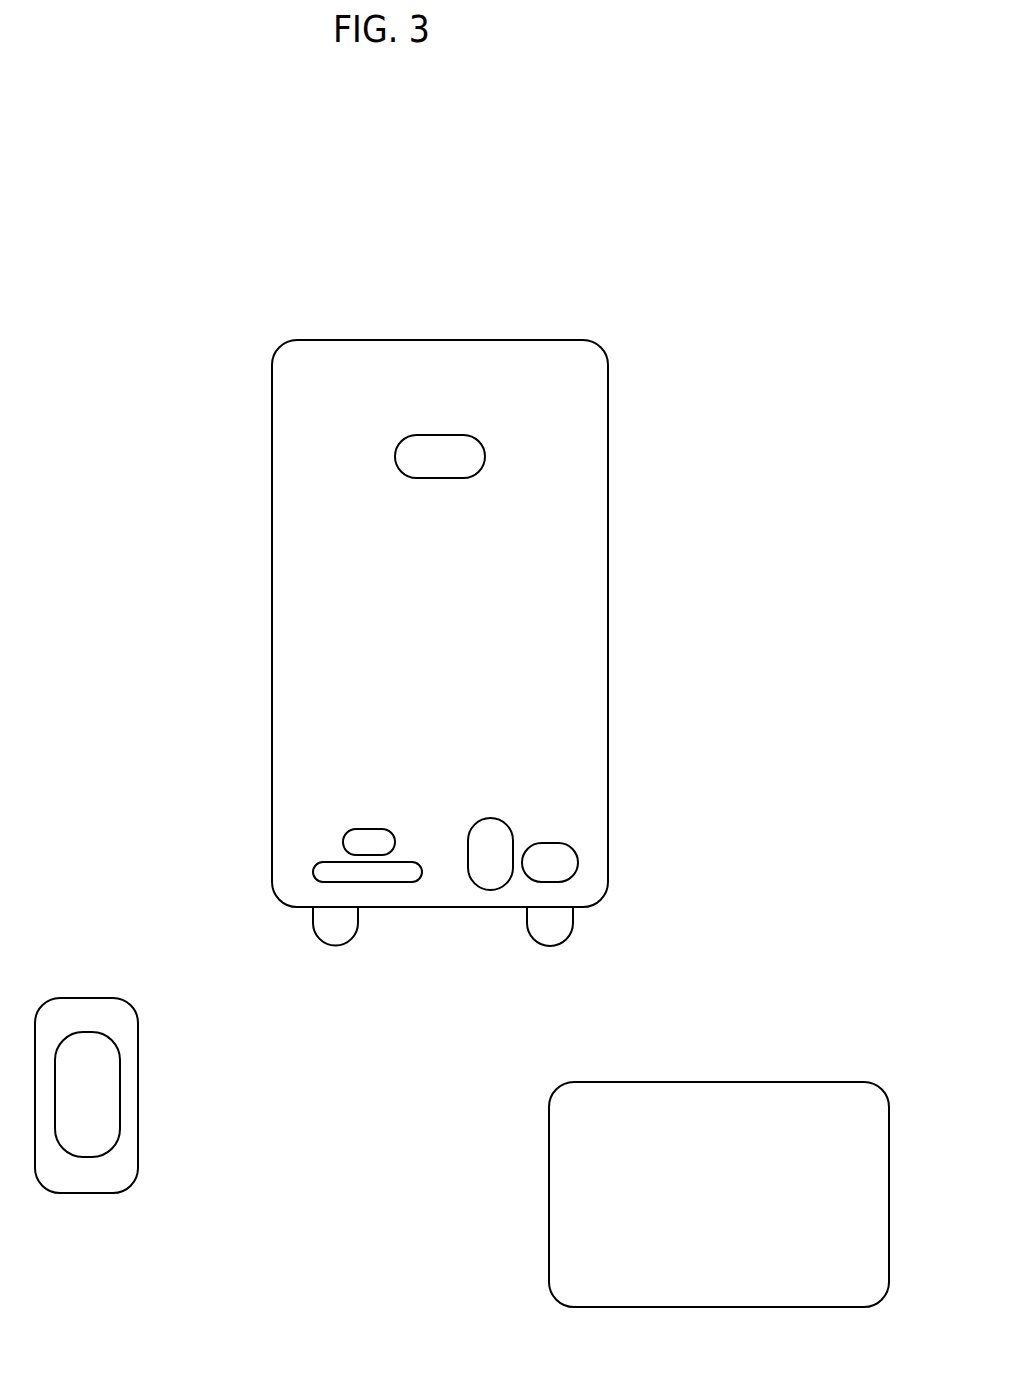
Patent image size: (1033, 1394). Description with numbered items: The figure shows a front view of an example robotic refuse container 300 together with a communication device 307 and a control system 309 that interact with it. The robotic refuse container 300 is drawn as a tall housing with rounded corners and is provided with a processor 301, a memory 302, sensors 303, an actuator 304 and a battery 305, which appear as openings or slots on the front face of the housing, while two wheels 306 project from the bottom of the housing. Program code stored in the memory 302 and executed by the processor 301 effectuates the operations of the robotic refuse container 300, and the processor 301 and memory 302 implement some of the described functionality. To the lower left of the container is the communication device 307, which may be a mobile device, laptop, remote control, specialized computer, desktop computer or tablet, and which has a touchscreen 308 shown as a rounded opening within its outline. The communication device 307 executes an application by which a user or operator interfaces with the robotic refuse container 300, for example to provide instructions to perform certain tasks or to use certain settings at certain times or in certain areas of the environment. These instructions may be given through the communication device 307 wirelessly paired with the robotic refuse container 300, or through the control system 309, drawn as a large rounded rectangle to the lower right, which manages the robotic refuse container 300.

The robotic refuse container 300 is at (609, 620).
The processor 301 is at (353, 829).
The memory 302 is at (578, 862).
The sensors 303 is at (485, 456).
The actuator 304 is at (510, 830).
The battery 305 is at (313, 872).
The wheels 306 is at (573, 925).
The communication device 307 is at (120, 1133).
The touchscreen 308 is at (138, 1050).
The control system 309 is at (549, 1193).